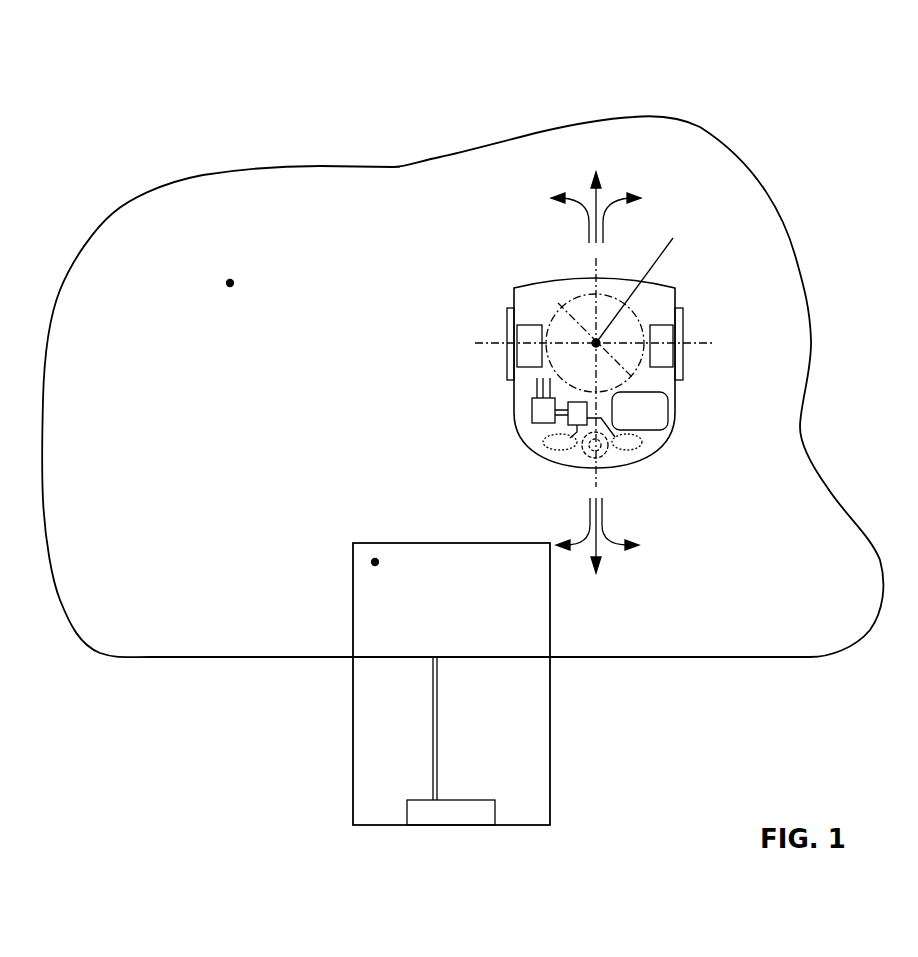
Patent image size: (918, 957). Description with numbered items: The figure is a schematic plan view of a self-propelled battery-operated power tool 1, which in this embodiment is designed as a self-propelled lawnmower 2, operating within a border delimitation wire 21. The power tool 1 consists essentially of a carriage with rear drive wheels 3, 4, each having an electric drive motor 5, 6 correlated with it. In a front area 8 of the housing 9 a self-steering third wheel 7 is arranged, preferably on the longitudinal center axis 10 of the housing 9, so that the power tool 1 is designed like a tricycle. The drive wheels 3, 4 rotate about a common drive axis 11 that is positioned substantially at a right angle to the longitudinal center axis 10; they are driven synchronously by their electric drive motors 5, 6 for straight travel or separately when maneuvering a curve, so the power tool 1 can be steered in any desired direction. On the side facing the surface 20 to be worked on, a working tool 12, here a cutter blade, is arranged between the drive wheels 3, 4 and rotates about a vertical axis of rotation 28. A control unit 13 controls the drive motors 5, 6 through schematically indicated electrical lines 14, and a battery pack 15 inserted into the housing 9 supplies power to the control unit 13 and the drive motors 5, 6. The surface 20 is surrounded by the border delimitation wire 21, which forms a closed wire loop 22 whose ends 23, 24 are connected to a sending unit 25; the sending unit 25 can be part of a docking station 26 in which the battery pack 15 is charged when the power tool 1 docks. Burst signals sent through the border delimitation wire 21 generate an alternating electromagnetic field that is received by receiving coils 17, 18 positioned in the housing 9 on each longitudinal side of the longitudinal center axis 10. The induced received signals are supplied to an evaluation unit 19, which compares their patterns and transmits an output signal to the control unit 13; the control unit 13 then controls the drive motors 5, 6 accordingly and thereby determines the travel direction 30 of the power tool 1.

The power tool 1 is at (640, 371).
The self-propelled lawnmower 2 is at (580, 278).
The rear drive wheel 3 is at (512, 330).
The rear drive wheel 4 is at (680, 330).
The electric drive motor 5 is at (528, 330).
The electric drive motor 6 is at (660, 330).
The self-steering third wheel 7 is at (608, 450).
The front area 8 is at (648, 462).
The housing 9 is at (620, 287).
The longitudinal center axis 10 is at (595, 485).
The common drive axis 11 is at (710, 345).
The working tool 12 is at (565, 313).
The control unit 13 is at (540, 411).
The electrical lines 14 is at (542, 388).
The battery pack 15 is at (657, 409).
The receiving coil 17 is at (555, 445).
The receiving coil 18 is at (637, 442).
The evaluation unit 19 is at (575, 418).
The surface to be worked on 20 is at (230, 283).
The border delimitation wire 21 is at (277, 165).
The closed wire loop 22 is at (395, 160).
The wire loop end 23 is at (433, 800).
The wire loop end 24 is at (437, 800).
The sending unit 25 is at (458, 813).
The docking station 26 is at (375, 562).
The vertical axis of rotation 28 is at (648, 280).
The travel direction 30 is at (612, 371).